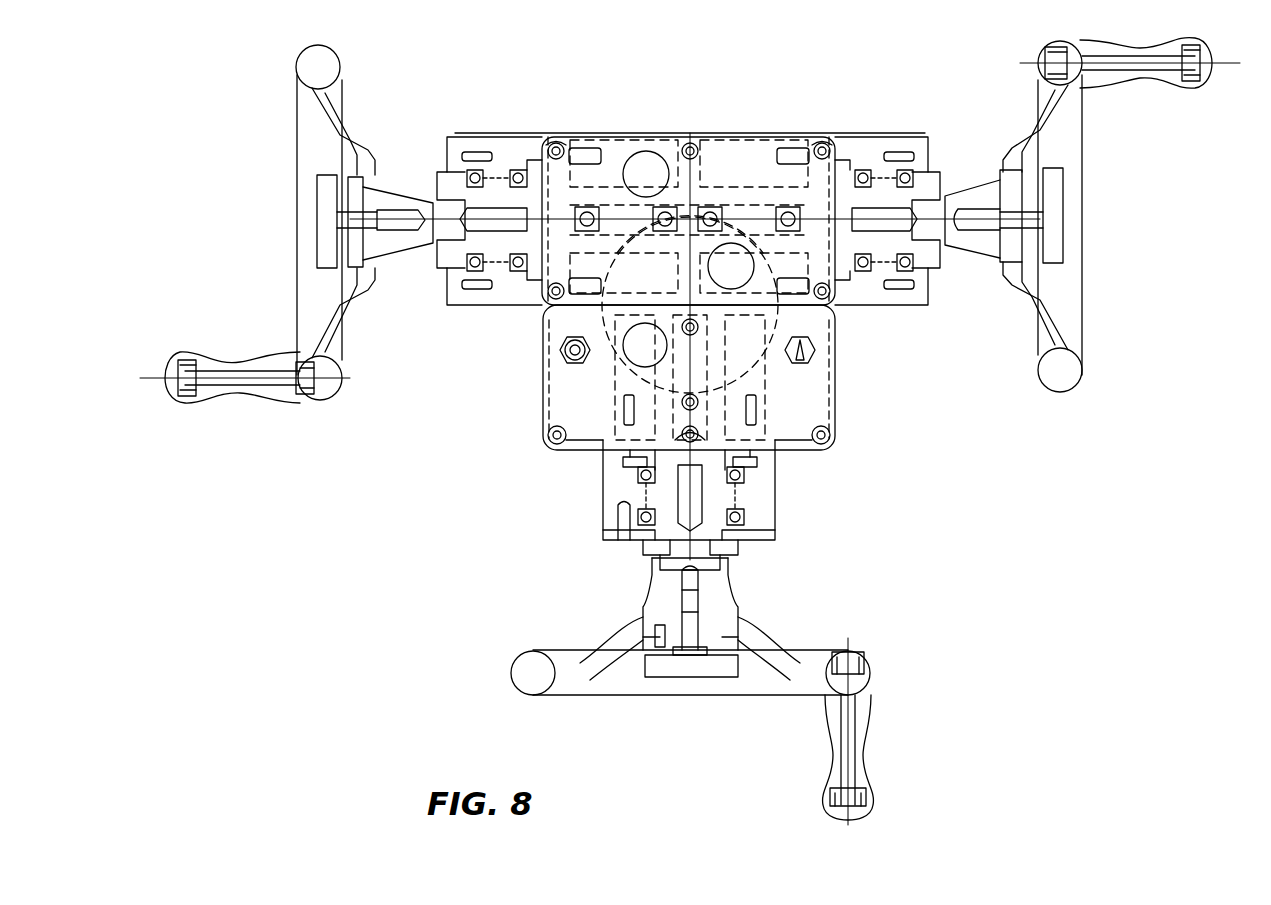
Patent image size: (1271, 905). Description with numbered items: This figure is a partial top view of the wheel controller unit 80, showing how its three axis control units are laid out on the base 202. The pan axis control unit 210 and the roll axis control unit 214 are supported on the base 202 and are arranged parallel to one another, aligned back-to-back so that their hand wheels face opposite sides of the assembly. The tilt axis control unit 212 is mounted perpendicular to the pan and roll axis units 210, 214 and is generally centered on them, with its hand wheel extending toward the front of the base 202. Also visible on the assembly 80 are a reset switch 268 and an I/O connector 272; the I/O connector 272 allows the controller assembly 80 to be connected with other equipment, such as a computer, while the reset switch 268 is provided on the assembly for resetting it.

The wheel controller unit 80 is at (662, 122).
The base 202 is at (808, 408).
The pan axis control unit 210 is at (492, 300).
The tilt axis control unit 212 is at (608, 407).
The roll axis control unit 214 is at (880, 298).
The reset switch 268 is at (810, 358).
The I/O connector 272 is at (558, 352).